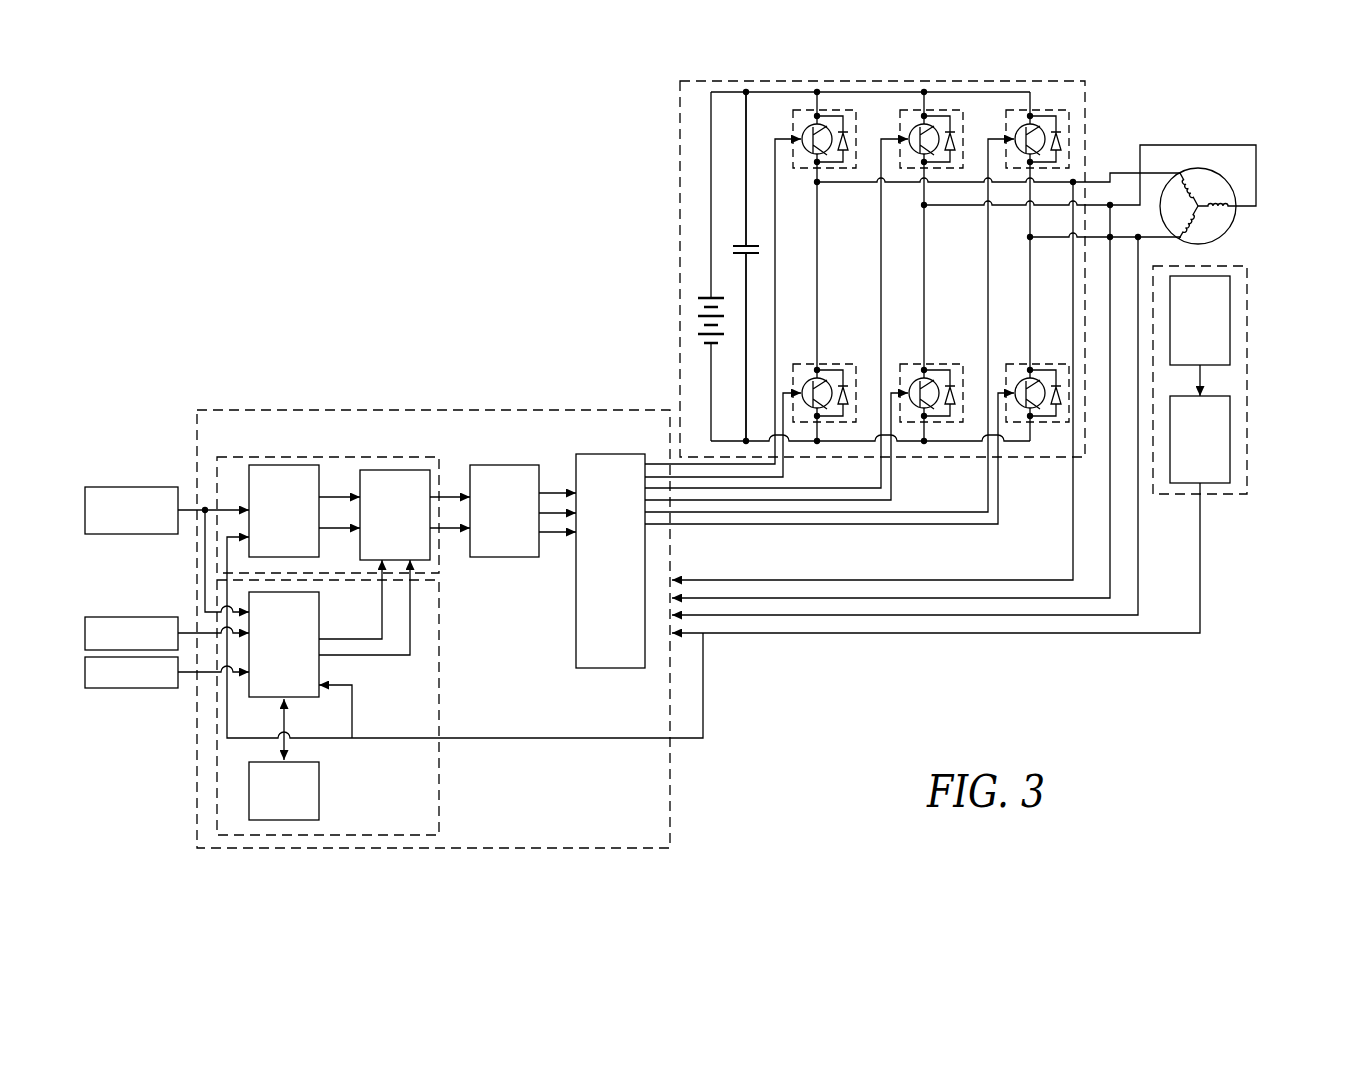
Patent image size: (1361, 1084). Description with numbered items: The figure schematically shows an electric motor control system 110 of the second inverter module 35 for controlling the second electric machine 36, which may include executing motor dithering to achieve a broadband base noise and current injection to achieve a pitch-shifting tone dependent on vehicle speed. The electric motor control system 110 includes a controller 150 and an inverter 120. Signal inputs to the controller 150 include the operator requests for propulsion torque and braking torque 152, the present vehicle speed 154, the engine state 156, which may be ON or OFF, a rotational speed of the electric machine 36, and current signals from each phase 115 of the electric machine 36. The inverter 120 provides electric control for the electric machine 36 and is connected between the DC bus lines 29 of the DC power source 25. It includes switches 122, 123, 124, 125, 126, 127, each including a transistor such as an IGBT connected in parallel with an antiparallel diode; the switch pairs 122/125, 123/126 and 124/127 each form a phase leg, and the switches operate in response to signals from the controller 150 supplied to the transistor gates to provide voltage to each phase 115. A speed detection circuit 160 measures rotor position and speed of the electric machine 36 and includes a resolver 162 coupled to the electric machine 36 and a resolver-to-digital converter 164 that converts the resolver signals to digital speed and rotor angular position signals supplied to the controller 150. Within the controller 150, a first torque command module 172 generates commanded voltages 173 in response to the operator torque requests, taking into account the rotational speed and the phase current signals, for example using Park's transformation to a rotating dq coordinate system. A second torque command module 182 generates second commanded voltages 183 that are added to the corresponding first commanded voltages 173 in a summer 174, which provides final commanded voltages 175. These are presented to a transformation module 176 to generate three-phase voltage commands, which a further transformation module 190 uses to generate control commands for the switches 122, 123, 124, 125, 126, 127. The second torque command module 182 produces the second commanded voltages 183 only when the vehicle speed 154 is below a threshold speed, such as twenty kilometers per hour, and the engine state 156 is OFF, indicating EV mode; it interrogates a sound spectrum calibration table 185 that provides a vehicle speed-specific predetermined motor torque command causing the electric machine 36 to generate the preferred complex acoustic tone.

The electric motor control system 110 is at (372, 259).
The controller 150 is at (280, 406).
The operator requests for propulsion torque and braking torque 152 is at (131, 510).
The vehicle speed 154 is at (131, 633).
The engine state 156 is at (131, 672).
The first torque command module 172 is at (284, 511).
The commanded voltages 173 is at (333, 510).
The summer 174 is at (395, 515).
The final commanded voltages 175 is at (447, 510).
The transformation module 176 is at (504, 511).
The second torque command module 182 is at (284, 644).
The second commanded voltages 183 is at (398, 620).
The sound spectrum calibration table 185 is at (284, 791).
The transformation module 190 is at (610, 561).
The second inverter module 35 is at (978, 84).
The inverter 120 is at (1086, 125).
The DC bus lines 29 is at (729, 93).
The DC power source 25 is at (711, 298).
The switch 122 is at (832, 170).
The switch 123 is at (938, 170).
The switch 124 is at (1023, 170).
The switch 125 is at (835, 362).
The switch 126 is at (940, 362).
The switch 127 is at (1033, 362).
The phase 115 is at (1130, 237).
The second electric machine 36 is at (1228, 232).
The speed detection circuit 160 is at (1247, 382).
The resolver 162 is at (1230, 322).
The resolver-to-digital converter 164 is at (1230, 440).